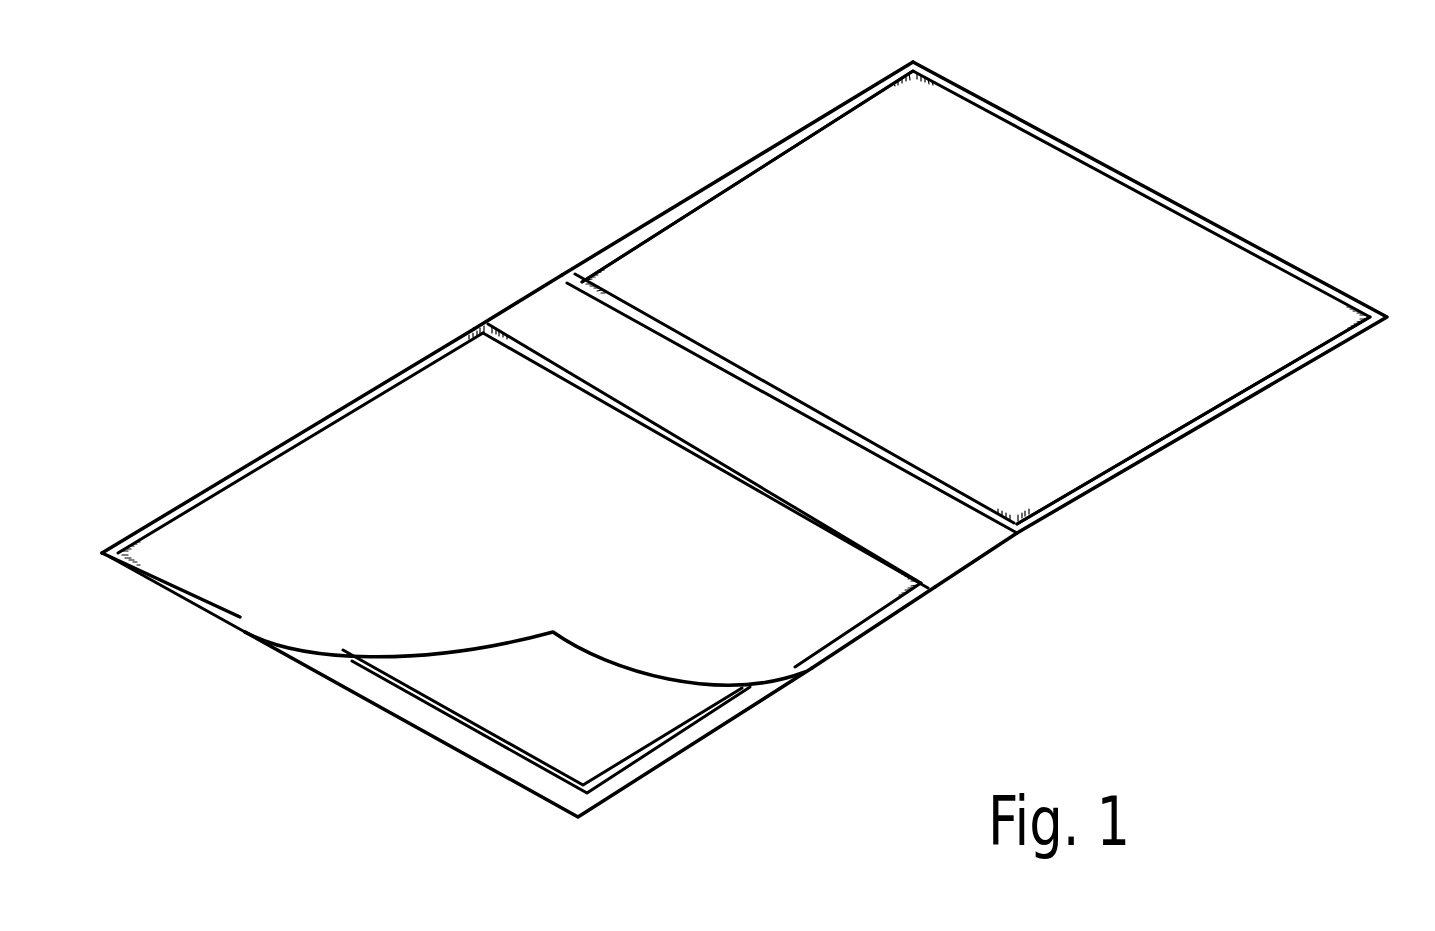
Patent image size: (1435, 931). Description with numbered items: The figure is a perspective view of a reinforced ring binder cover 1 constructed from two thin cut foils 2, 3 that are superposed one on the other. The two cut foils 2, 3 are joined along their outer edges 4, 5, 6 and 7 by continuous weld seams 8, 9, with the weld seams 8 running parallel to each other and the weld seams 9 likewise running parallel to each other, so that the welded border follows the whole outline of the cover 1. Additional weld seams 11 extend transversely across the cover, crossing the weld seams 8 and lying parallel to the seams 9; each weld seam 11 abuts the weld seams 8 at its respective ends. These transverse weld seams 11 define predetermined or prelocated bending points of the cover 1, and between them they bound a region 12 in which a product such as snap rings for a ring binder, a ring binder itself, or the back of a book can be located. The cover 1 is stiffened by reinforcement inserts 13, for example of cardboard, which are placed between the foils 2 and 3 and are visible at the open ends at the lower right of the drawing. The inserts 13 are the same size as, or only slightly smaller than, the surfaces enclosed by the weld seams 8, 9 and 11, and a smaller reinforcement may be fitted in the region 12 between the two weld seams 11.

The ring binder cover 1 is at (1147, 152).
The cut foil 2 is at (695, 735).
The cut foil 3 is at (592, 650).
The outer edge 4 is at (897, 617).
The outer edge 5 is at (1193, 210).
The outer edge 6 is at (743, 155).
The outer edge 7 is at (243, 632).
The weld seam 8 is at (640, 222).
The weld seam 9 is at (1295, 272).
The weld seam 11 is at (787, 398).
The region 12 is at (678, 405).
The reinforcement insert 13 is at (590, 755).